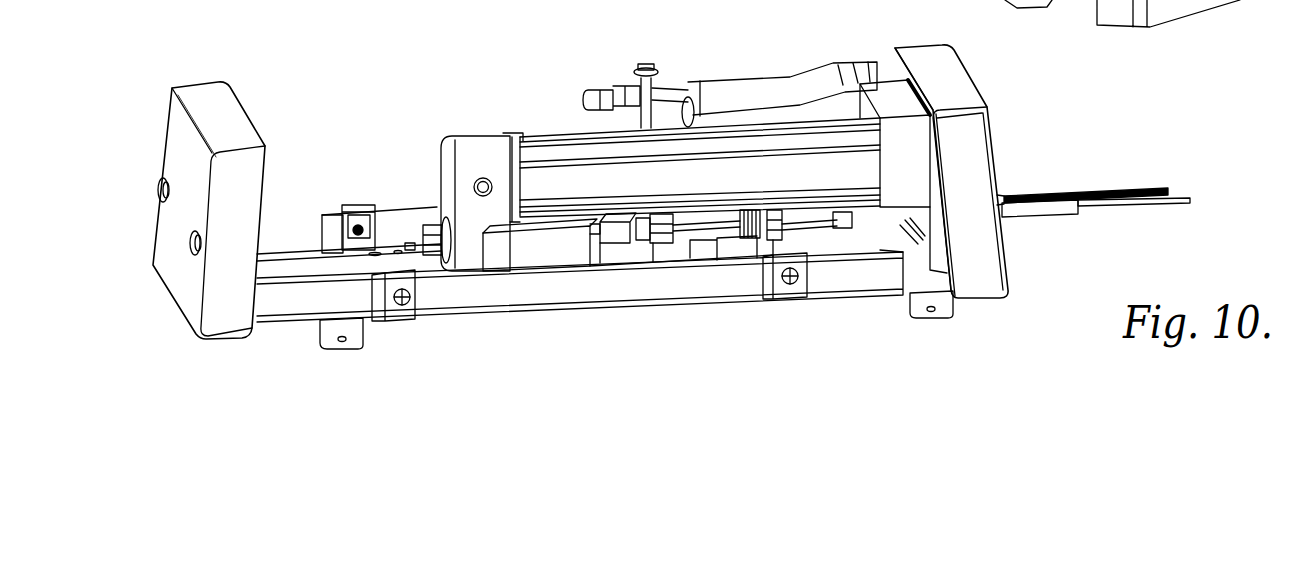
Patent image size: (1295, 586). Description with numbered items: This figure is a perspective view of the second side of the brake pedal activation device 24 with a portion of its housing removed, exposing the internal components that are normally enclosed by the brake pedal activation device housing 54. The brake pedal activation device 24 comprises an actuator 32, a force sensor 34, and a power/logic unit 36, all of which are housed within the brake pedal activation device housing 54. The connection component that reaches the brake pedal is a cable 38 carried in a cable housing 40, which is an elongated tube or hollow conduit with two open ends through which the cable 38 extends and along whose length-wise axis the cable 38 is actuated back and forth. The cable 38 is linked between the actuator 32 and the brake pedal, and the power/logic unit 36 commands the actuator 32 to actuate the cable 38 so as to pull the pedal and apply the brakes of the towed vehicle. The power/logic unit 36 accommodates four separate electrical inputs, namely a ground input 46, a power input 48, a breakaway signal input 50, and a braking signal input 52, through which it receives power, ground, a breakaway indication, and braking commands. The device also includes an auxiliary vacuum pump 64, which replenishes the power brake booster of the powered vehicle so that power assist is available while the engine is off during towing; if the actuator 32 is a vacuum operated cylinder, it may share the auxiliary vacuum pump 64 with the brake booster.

The brake pedal activation device 24 is at (406, 80).
The actuator 32 is at (570, 180).
The force sensor 34 is at (540, 255).
The power/logic unit 36 is at (833, 227).
The cable 38 is at (1165, 207).
The cable housing 40 is at (1038, 207).
The ground input 46 is at (1137, 166).
The power input 48 is at (1137, 166).
The breakaway signal input 50 is at (1137, 166).
The braking signal input 52 is at (1097, 193).
The brake pedal activation device housing 54 is at (957, 93).
The auxiliary vacuum pump 64 is at (752, 108).